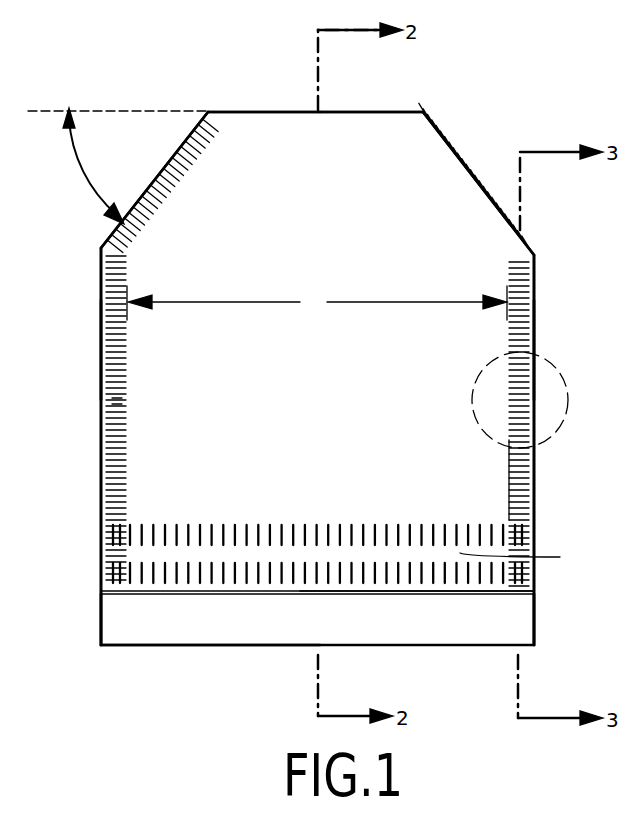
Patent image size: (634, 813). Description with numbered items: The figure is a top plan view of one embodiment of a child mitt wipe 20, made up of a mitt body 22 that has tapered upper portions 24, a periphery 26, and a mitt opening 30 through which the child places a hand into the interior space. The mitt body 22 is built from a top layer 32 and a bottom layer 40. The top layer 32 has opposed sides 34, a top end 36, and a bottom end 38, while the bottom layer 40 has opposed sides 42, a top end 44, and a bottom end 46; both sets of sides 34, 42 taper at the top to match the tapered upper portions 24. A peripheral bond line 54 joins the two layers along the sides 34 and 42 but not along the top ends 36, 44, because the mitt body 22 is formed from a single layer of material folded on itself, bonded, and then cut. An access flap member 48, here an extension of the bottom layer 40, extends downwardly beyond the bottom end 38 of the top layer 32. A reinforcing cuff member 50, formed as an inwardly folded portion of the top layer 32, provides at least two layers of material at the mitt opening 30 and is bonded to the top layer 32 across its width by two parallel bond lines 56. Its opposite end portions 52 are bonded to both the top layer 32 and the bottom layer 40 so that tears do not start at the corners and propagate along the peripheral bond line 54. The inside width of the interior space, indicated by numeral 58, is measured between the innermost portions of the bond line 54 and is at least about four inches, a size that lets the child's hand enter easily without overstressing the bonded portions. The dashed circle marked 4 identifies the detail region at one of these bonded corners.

The detail circle 4 is at (568, 402).
The mitt wipe 20 is at (525, 112).
The mitt body 22 is at (560, 218).
The tapered upper portions 24 is at (168, 165).
The periphery 26 is at (105, 243).
The mitt opening 30 is at (290, 596).
The top layer 32 is at (480, 487).
The opposed sides 34 is at (100, 337).
The top end 36 is at (262, 110).
The bottom end 38 is at (452, 596).
The bottom layer 40 is at (513, 618).
The opposed sides 42 is at (100, 437).
The top end 44 is at (383, 110).
The bottom end 46 is at (150, 646).
The access flap member 48 is at (216, 625).
The reinforcing cuff member 50 is at (529, 555).
The opposite end portions 52 is at (114, 573).
The peripheral bond line 54 is at (116, 402).
The parallel bond lines 56 is at (306, 530).
The inside width of interior space 58 is at (317, 303).